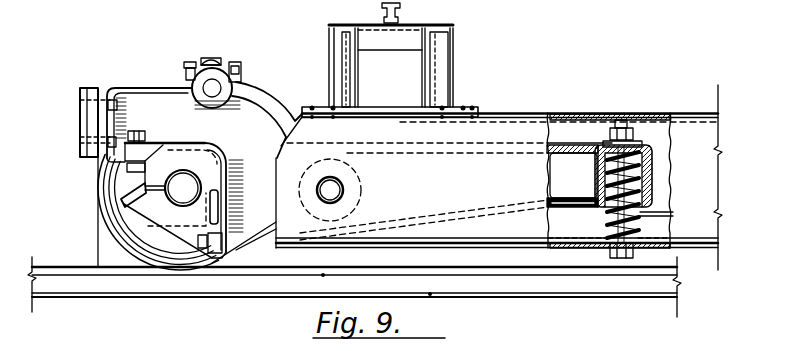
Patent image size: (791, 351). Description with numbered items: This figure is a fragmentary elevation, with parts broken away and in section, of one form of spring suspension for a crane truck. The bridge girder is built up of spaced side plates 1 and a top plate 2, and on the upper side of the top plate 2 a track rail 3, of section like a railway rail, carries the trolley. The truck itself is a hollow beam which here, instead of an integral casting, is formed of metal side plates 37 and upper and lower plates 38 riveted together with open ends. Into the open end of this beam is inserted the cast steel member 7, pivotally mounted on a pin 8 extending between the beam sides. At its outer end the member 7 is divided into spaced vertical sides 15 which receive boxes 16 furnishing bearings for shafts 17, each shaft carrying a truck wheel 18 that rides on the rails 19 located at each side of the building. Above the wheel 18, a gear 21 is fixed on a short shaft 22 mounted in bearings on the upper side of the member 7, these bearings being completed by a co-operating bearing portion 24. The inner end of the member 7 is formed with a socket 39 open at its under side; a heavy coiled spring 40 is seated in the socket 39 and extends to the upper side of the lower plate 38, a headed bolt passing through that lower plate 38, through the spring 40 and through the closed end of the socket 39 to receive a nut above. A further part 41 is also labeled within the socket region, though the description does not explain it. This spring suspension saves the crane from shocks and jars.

The side plates 1 is at (423, 73).
The top plate 2 is at (453, 26).
The track rail 3 is at (398, 7).
The member 7 is at (570, 199).
The pin 8 is at (340, 193).
The vertical sides 15 is at (240, 118).
The boxes 16 is at (122, 203).
The shafts 17 is at (192, 192).
The truck wheel 18 is at (157, 208).
The rails 19 is at (622, 287).
The gear 21 is at (213, 58).
The short shaft 22 is at (212, 88).
The bearing portion 24 is at (236, 72).
The side plates 37 is at (462, 222).
The upper and lower plates 38 is at (568, 115).
The socket 39 is at (643, 175).
The coiled spring 40 is at (672, 209).
The follower 41 is at (608, 187).